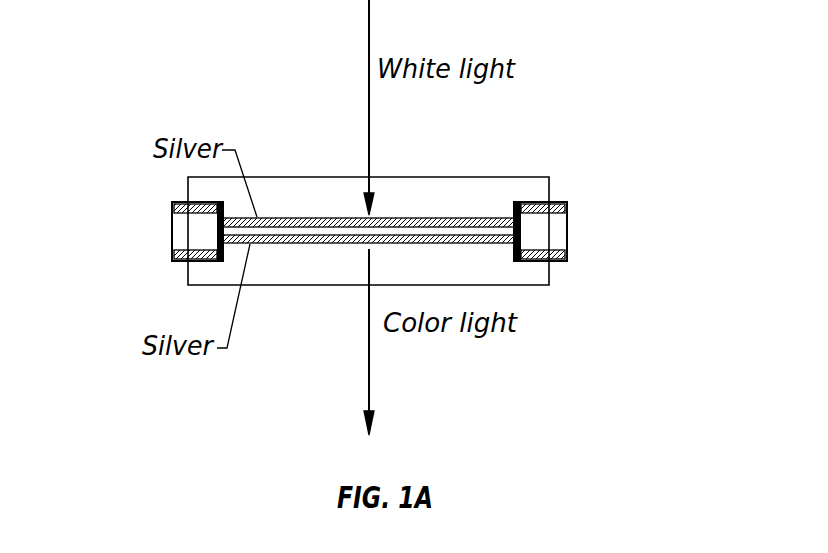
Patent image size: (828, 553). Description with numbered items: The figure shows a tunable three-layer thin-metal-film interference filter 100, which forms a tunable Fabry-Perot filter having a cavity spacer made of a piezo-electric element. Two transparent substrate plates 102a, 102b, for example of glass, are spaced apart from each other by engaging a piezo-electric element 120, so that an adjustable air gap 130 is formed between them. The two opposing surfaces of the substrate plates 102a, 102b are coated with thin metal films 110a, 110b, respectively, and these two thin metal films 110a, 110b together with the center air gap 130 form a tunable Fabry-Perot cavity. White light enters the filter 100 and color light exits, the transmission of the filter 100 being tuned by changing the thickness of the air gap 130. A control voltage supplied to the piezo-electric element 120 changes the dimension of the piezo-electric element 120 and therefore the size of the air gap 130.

The tunable three-layer thin-metal-film interference filter 100 is at (626, 58).
The transparent substrate plate 102a is at (523, 176).
The transparent substrate plate 102b is at (188, 284).
The thin metal film 110a is at (407, 218).
The thin metal film 110b is at (422, 245).
The piezo-electric element 120 is at (567, 232).
The air gap 130 is at (358, 232).